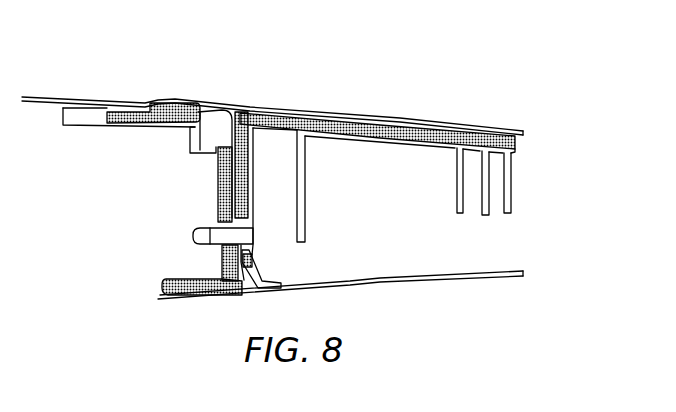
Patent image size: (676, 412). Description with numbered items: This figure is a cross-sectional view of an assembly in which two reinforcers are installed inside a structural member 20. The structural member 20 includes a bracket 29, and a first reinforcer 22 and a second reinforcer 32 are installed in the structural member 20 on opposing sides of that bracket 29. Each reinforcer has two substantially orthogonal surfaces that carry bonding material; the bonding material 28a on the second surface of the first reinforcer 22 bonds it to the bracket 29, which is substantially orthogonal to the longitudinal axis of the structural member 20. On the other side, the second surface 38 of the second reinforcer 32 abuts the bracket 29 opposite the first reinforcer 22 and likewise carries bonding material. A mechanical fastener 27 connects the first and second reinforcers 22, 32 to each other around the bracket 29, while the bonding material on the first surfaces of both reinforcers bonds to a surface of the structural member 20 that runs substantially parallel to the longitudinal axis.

The structural member 20 is at (433, 282).
The first reinforcer 22 is at (372, 124).
The mechanical fastener 27 is at (197, 236).
The bonding material 28a is at (243, 140).
The bracket 29 is at (253, 277).
The second reinforcer 32 is at (130, 111).
The second surface 38 is at (223, 178).